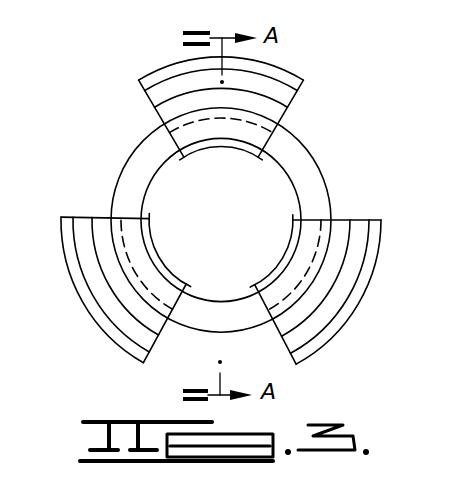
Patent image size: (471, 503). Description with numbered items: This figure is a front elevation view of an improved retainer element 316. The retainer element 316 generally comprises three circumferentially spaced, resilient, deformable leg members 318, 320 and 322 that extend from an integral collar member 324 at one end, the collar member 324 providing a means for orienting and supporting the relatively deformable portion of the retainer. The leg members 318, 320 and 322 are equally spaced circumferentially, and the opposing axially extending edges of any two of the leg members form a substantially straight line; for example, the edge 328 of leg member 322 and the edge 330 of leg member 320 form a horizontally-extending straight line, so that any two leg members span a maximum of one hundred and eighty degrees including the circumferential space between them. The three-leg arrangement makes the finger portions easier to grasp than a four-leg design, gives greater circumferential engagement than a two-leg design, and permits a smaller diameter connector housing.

The retainer element 316 is at (66, 182).
The leg member 318 is at (221, 108).
The leg member 320 is at (315, 289).
The leg member 322 is at (126, 288).
The collar member 324 is at (221, 220).
The edge 328 is at (96, 217).
The edge 330 is at (325, 286).